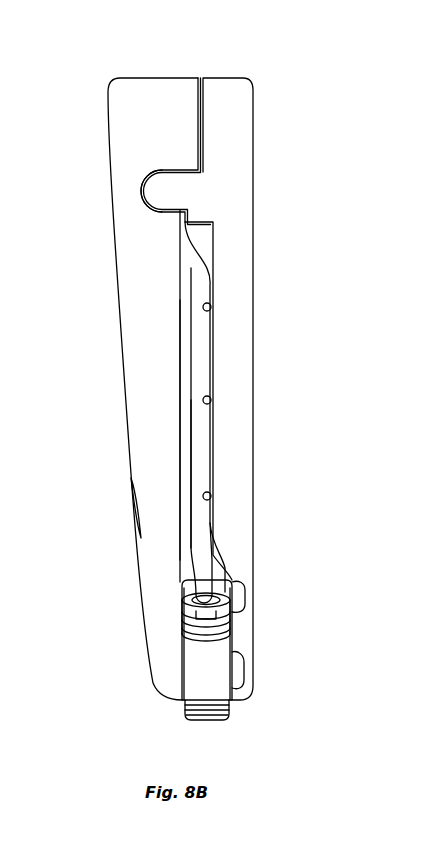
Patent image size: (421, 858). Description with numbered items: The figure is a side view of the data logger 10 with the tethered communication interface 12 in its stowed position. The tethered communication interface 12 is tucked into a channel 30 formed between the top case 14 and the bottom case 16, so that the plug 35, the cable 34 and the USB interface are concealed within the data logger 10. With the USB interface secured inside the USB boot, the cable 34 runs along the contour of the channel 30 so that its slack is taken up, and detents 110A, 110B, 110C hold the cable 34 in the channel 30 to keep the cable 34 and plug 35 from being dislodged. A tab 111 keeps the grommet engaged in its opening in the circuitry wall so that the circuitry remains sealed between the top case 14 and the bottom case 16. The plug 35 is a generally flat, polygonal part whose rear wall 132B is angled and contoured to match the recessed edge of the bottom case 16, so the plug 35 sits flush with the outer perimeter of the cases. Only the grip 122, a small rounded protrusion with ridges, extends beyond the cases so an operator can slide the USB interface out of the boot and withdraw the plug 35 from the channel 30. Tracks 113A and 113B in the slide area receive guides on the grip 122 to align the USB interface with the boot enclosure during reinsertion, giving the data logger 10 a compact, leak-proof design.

The data logger 10 is at (262, 79).
The top case 14 is at (145, 92).
The bottom case 16 is at (218, 90).
The tab 111 is at (172, 191).
The channel 30 is at (180, 413).
The cable 34 is at (196, 445).
The detent 110C is at (204, 304).
The detent 110B is at (205, 397).
The detent 110A is at (204, 493).
The tethered communication interface 12 is at (196, 552).
The track 113B is at (245, 588).
The track 113A is at (244, 683).
The rear wall 132B is at (193, 651).
The plug 35 is at (217, 654).
The grip 122 is at (185, 707).